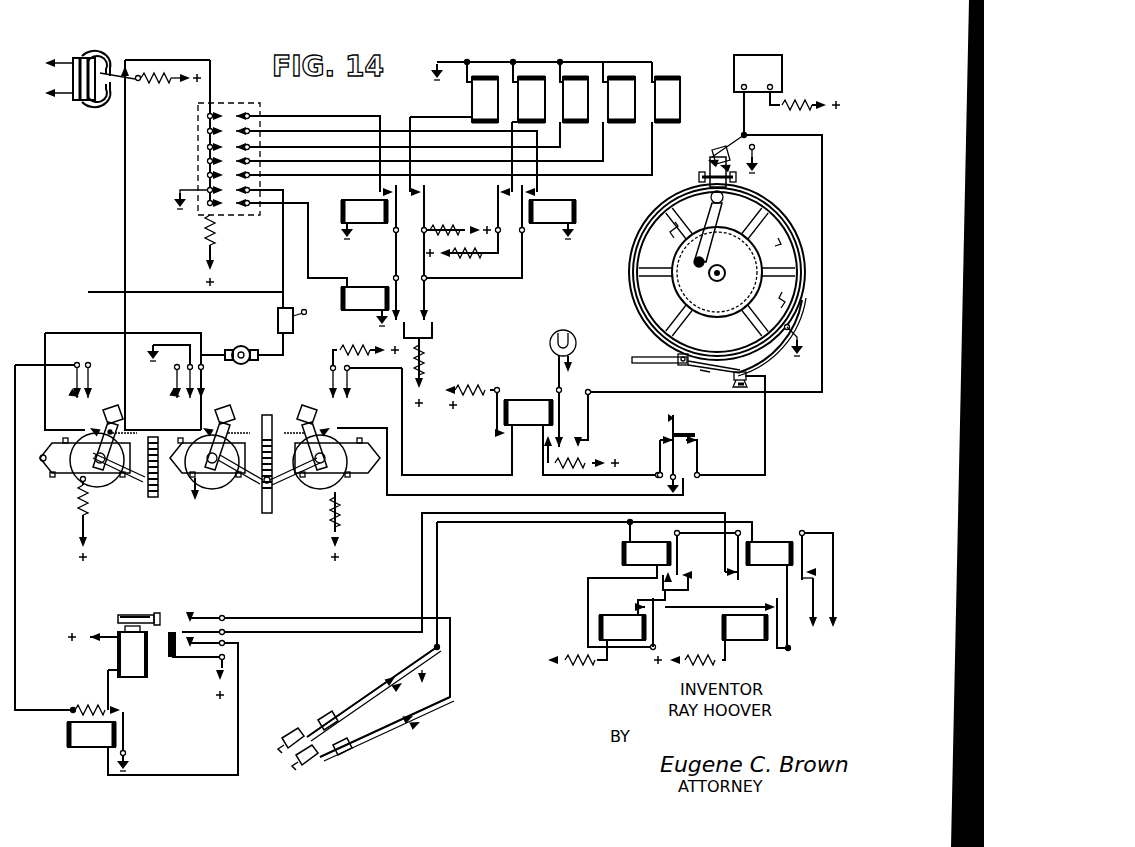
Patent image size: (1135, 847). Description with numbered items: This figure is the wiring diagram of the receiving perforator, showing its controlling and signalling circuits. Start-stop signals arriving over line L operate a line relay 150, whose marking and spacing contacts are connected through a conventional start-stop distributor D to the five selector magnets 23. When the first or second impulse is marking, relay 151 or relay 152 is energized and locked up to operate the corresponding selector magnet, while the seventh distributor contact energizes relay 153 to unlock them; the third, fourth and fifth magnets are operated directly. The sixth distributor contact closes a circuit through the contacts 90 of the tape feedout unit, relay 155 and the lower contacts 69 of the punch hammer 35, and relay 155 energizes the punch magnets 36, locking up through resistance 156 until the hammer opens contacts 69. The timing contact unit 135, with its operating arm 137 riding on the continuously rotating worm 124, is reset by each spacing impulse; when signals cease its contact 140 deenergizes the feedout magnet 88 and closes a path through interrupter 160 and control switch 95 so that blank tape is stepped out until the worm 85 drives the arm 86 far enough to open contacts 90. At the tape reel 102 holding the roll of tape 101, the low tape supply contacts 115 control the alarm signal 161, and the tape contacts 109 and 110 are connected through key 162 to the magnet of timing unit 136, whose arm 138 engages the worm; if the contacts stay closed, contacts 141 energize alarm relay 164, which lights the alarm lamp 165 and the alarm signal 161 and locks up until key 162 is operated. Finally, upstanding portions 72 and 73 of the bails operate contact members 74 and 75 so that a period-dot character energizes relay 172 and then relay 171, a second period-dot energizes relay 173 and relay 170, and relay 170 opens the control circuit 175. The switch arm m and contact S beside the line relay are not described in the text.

The line relay 150 is at (100, 108).
The switch arm m is at (126, 76).
The switch S is at (128, 76).
The start-stop distributor D is at (220, 103).
The selector magnets 23 is at (663, 82).
The relay 151 is at (352, 200).
The relay 152 is at (555, 200).
The relay 153 is at (378, 272).
The alarm signal 161 is at (754, 55).
The low tape supply contacts 115 is at (723, 158).
The tape reel 102 is at (630, 267).
The roll of tape 101 is at (641, 357).
The contact 109 is at (704, 370).
The stationary contact 110 is at (736, 376).
The control switch 95 is at (293, 332).
The interrupter 160 is at (250, 346).
The movable contact member 140 is at (195, 378).
The contacts 90 is at (80, 378).
The contact member 141 is at (345, 376).
The tape feedout unit magnet 88 is at (74, 482).
The contact operating arm 86 is at (102, 485).
The worm 85 is at (153, 495).
The timing contact unit 135 is at (210, 470).
The operating arm member 137 is at (248, 488).
The worm 124 is at (266, 510).
The timing unit 136 is at (332, 483).
The operating arm member 138 is at (284, 488).
The alarm relay 164 is at (536, 392).
The alarm lamp 165 is at (563, 330).
The key 162 is at (688, 432).
The resistance 156 is at (93, 704).
The relay 155 is at (100, 750).
The punch magnets 36 is at (139, 678).
The punch hammer 35 is at (124, 614).
The contacts 69 is at (192, 640).
The movable contact member 74 is at (366, 696).
The movable contact member 75 is at (366, 742).
The upstanding portion 72 is at (294, 734).
The upstanding portion 73 is at (308, 768).
The relay 171 is at (623, 551).
The relay 170 is at (760, 542).
The relay 172 is at (622, 616).
The relay 173 is at (739, 642).
The control circuit 175 is at (822, 640).